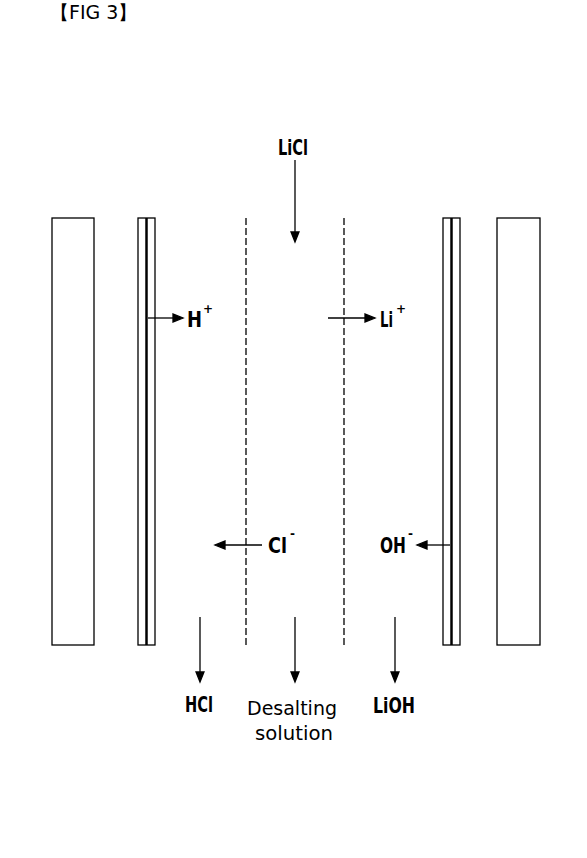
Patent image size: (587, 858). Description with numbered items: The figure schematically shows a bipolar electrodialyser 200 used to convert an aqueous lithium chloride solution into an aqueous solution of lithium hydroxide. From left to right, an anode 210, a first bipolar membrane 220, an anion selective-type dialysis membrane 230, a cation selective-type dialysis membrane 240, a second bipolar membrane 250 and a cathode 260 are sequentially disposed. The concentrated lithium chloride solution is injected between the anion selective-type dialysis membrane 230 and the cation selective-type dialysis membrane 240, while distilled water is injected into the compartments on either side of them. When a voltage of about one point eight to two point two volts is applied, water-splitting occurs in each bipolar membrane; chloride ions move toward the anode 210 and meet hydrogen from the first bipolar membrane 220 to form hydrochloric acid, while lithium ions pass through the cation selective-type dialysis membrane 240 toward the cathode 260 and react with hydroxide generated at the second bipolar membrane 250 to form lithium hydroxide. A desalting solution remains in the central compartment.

The electrodialyser 200 is at (305, 92).
The anode 210 is at (71, 218).
The first bipolar membrane 220 is at (146, 218).
The anion selective-type dialysis membrane 230 is at (246, 218).
The cation selective-type dialysis membrane 240 is at (344, 218).
The second bipolar membrane 250 is at (451, 218).
The cathode 260 is at (518, 218).